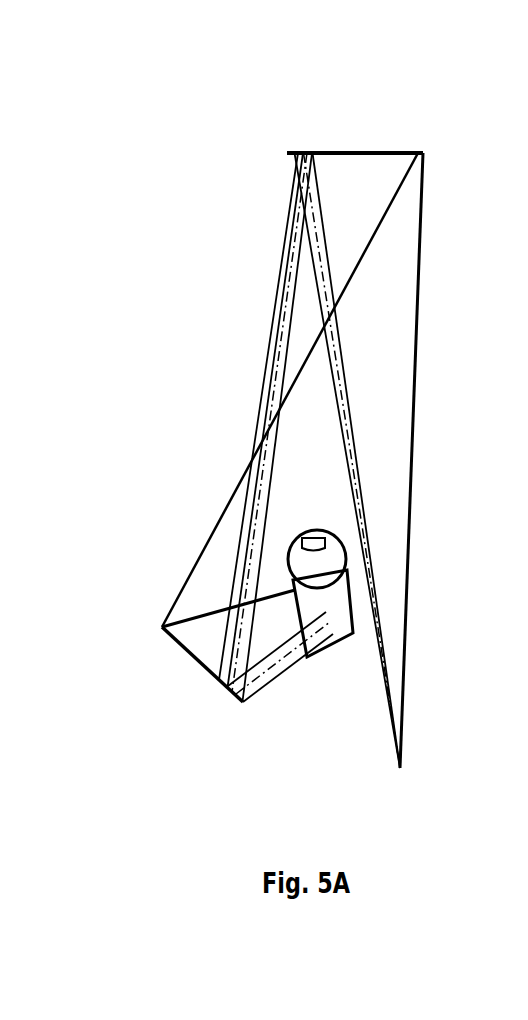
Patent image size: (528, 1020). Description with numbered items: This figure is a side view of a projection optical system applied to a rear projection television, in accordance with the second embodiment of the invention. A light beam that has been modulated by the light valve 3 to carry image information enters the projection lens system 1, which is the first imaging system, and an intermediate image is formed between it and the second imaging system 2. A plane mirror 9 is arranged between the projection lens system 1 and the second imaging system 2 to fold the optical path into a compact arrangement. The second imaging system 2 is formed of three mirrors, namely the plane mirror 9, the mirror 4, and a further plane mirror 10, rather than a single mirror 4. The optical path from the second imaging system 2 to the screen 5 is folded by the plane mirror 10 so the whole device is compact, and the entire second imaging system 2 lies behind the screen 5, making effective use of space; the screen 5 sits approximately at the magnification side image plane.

The projection lens system 1 is at (317, 575).
The second imaging system 2 is at (213, 676).
The light valve 3 is at (316, 530).
The mirror 4 is at (208, 683).
The screen 5 is at (415, 337).
The plane mirror 9 is at (342, 632).
The plane mirror 10 is at (352, 152).